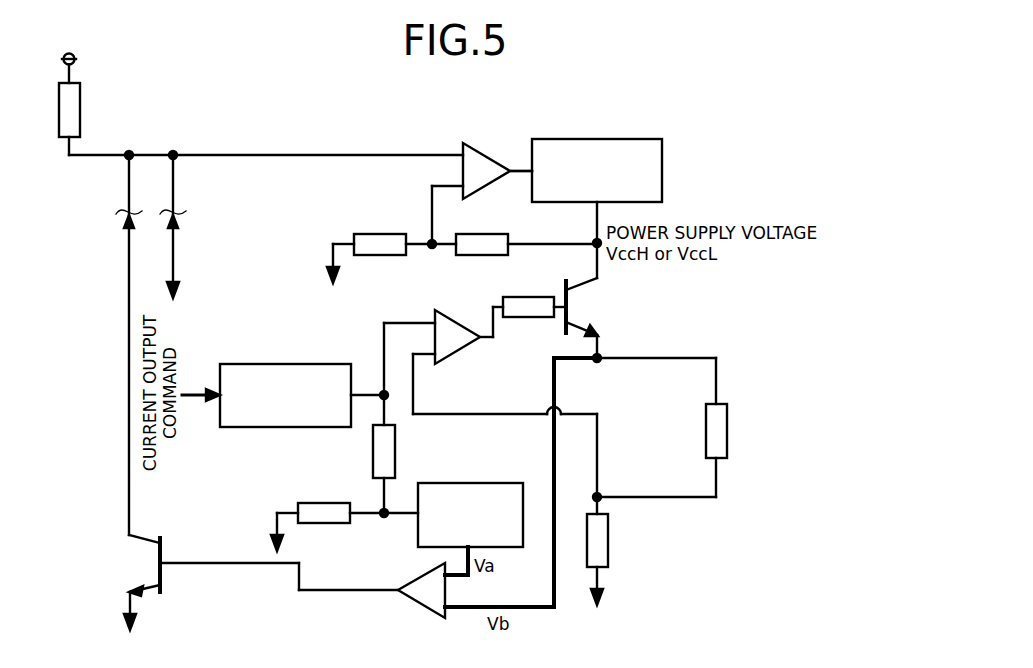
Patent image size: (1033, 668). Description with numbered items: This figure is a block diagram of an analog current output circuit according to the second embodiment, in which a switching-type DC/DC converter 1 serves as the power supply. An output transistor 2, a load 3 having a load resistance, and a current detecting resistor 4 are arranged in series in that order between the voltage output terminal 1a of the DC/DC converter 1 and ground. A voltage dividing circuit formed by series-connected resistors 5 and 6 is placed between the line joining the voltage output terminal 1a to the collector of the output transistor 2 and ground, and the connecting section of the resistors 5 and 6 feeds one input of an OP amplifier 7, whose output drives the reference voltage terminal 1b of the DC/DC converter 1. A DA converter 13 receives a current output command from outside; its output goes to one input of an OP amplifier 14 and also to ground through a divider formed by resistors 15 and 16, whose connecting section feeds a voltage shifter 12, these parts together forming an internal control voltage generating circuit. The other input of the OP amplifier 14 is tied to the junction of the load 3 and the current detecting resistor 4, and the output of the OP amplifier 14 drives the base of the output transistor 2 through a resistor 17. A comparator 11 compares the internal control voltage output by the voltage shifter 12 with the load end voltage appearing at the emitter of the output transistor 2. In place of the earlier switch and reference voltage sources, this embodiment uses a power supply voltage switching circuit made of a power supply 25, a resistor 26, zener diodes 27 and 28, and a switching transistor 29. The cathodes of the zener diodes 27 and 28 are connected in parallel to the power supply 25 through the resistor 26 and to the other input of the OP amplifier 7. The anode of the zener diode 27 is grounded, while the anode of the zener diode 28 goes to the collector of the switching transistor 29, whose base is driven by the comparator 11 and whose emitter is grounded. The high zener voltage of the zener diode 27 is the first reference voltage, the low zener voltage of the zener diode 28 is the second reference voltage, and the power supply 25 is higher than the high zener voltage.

The DC/DC converter 1 is at (644, 138).
The voltage output terminal 1a is at (594, 206).
The reference voltage terminal 1b is at (532, 170).
The output transistor 2 is at (562, 318).
The load 3 is at (727, 432).
The current detecting resistor 4 is at (608, 540).
The resistor 5 is at (496, 232).
The resistor 6 is at (392, 232).
The OP amplifier 7 is at (478, 148).
The comparator 11 is at (394, 585).
The voltage shifter 12 is at (490, 482).
The DA converter 13 is at (327, 363).
The OP amplifier 14 is at (449, 315).
The resistor 15 is at (395, 450).
The resistor 16 is at (332, 502).
The resistor 17 is at (540, 300).
The power supply 25 is at (76, 60).
The resistor 26 is at (80, 115).
The zener diode 27 is at (182, 222).
The zener diode 28 is at (120, 222).
The switching transistor 29 is at (163, 548).